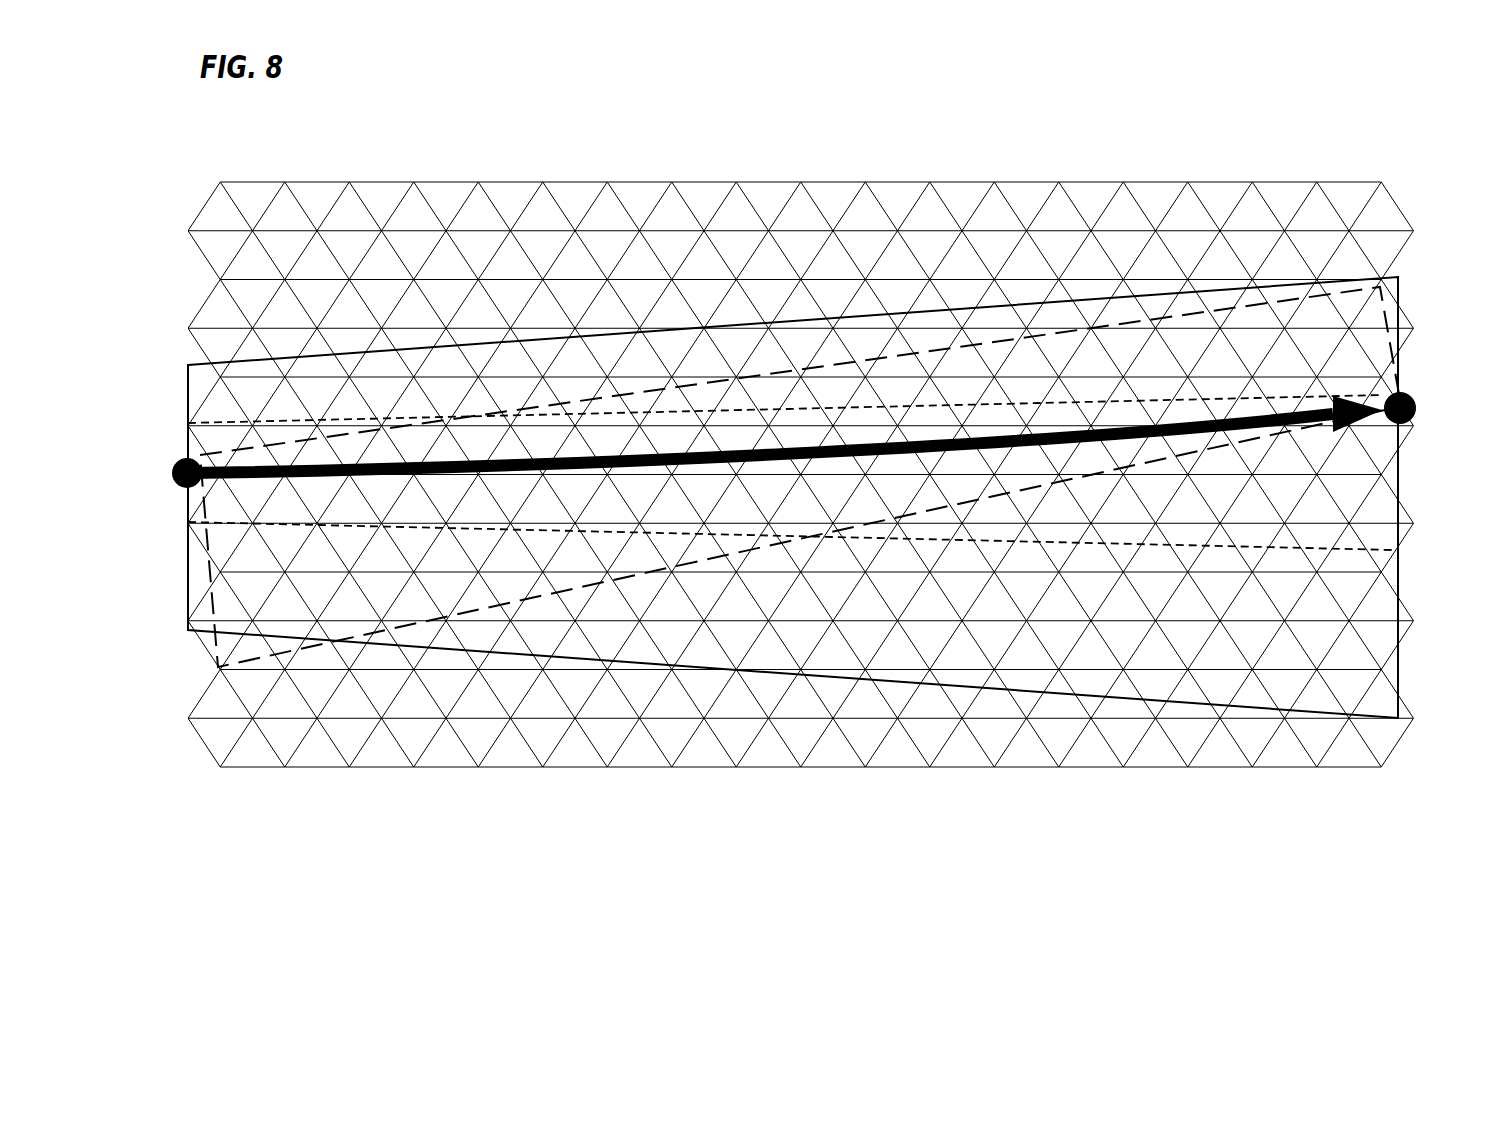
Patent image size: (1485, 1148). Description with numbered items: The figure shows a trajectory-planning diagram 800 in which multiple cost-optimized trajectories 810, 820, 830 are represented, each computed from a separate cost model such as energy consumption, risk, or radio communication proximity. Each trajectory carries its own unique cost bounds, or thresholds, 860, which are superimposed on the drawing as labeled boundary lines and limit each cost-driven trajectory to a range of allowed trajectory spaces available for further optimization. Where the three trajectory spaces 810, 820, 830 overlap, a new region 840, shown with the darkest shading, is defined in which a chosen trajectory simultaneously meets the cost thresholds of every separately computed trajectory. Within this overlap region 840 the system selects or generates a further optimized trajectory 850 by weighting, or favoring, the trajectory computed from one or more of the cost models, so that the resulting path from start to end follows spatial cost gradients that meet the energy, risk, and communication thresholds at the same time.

The cost map / path planning diagram 800 is at (215, 892).
The cost-optimized trajectory 810 is at (867, 338).
The cost-optimized trajectory 820 is at (340, 585).
The cost-optimized trajectory 830 is at (1140, 517).
The overlap region 840 is at (888, 482).
The further optimized trajectory 850 is at (1120, 427).
The cost bounds (thresholds) 860 is at (438, 397).